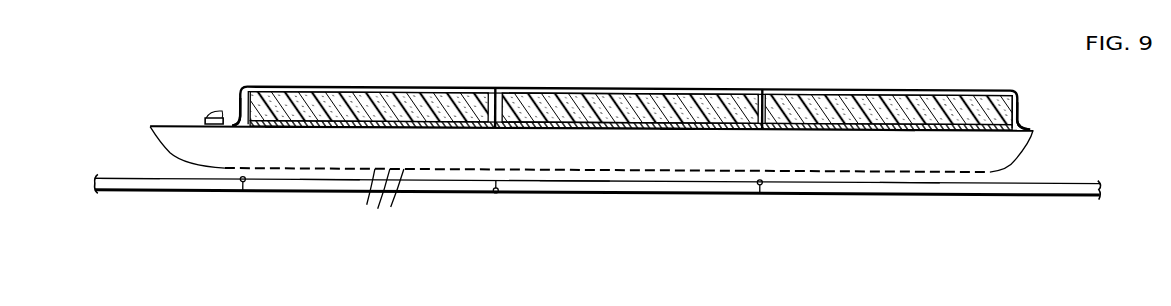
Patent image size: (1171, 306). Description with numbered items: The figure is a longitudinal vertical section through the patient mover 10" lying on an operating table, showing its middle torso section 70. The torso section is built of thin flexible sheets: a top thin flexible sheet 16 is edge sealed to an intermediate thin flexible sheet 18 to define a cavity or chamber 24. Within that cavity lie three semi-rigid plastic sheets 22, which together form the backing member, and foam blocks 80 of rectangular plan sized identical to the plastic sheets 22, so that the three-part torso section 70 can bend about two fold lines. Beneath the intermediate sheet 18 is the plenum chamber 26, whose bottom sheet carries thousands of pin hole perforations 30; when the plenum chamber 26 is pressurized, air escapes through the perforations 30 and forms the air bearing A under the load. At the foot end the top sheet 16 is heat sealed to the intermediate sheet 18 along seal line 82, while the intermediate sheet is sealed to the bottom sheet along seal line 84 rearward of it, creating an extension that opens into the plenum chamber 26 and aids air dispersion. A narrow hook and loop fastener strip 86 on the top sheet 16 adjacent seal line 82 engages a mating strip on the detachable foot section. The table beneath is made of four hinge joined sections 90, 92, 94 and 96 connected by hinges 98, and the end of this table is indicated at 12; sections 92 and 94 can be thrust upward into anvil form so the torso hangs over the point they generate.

The patient mover 10 is at (956, 50).
The mounting plate / base 12 is at (1059, 194).
The top thin flexible sheet 16 is at (432, 87).
The intermediate thin flexible sheet 18 is at (386, 130).
The semi-rigid plastic sheets 22 is at (280, 130).
The cavity or chamber 24 is at (1025, 124).
The plenum chamber 26 is at (936, 150).
The perforations 30 is at (385, 203).
The middle torso section 70 is at (530, 82).
The foam blocks 80 is at (308, 95).
The seal line 82 is at (232, 125).
The seal line 84 is at (150, 128).
The hook and loop type fastener strip 86 is at (205, 114).
The table section 90 is at (123, 184).
The table section 92 is at (328, 184).
The table section 94 is at (575, 189).
The table section 96 is at (910, 189).
The hinges 98 is at (242, 185).
The air bearing A is at (664, 174).